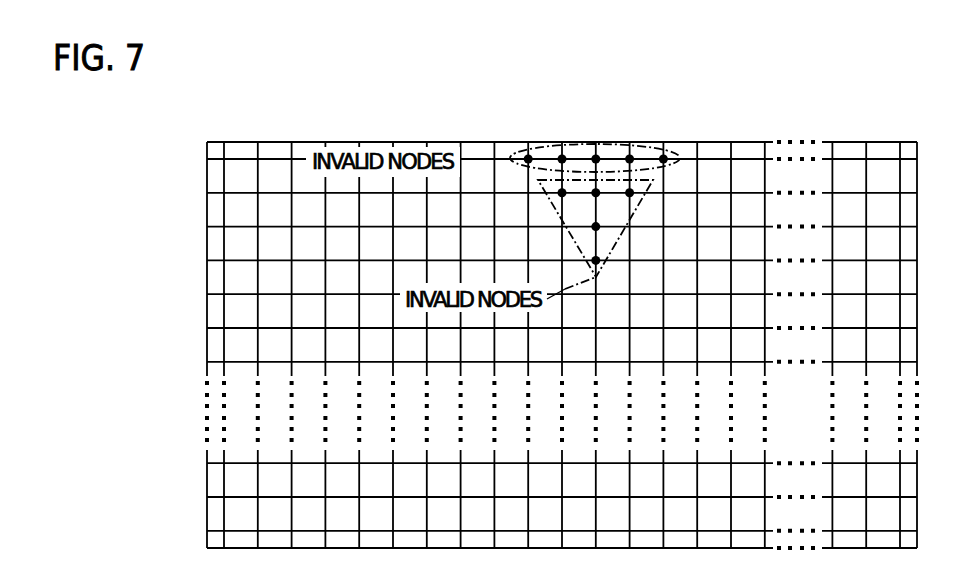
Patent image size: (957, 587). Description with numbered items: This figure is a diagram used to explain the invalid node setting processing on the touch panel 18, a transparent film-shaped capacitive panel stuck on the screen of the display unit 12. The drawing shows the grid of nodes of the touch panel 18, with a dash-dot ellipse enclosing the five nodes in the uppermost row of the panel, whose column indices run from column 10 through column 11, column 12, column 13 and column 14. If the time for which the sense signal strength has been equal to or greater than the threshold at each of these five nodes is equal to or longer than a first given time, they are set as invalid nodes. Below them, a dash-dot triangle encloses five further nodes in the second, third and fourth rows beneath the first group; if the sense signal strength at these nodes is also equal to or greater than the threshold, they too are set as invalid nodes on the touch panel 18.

The touch panel 18 is at (279, 66).
The node column 10 (N[10,1]) 10 is at (527, 158).
The node column 11 (N[11,1], N[11,2]) 11 is at (561, 158).
The display unit 12 is at (588, 203).
The node column 13 (N[13,1], N[13,2]) 13 is at (629, 158).
The node column 14 (N[14,1]) 14 is at (662, 158).